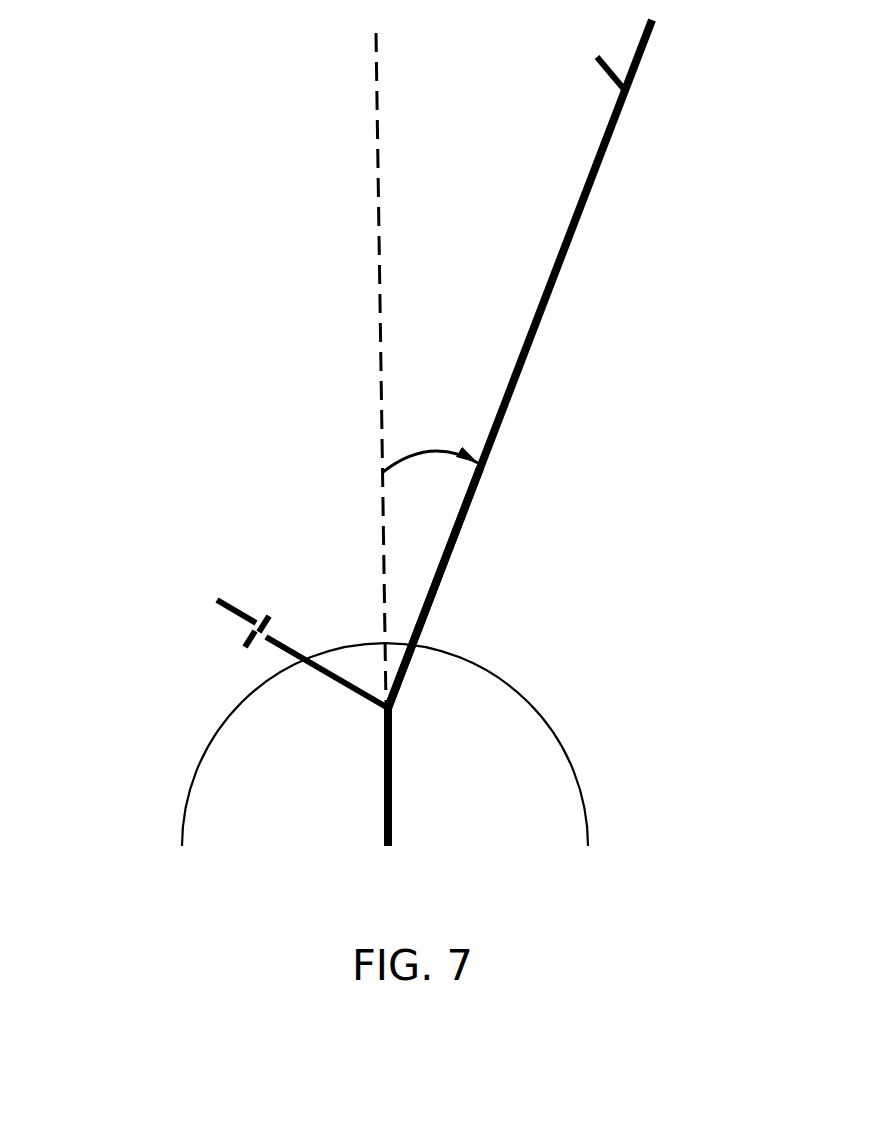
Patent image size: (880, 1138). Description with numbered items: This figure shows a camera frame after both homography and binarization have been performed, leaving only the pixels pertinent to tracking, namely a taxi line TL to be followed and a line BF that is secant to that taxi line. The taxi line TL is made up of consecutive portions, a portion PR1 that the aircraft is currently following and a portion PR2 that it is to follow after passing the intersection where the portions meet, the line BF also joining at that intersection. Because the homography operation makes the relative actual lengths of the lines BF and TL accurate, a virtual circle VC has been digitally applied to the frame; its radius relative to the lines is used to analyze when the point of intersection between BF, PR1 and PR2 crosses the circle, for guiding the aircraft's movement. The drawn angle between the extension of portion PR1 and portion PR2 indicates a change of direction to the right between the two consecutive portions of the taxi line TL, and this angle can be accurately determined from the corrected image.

The taxi line TL is at (558, 287).
The portion PR2 is at (467, 536).
The portion PR1 is at (391, 813).
The virtual circle VC is at (570, 757).
The line secant to the taxi line BF is at (213, 613).